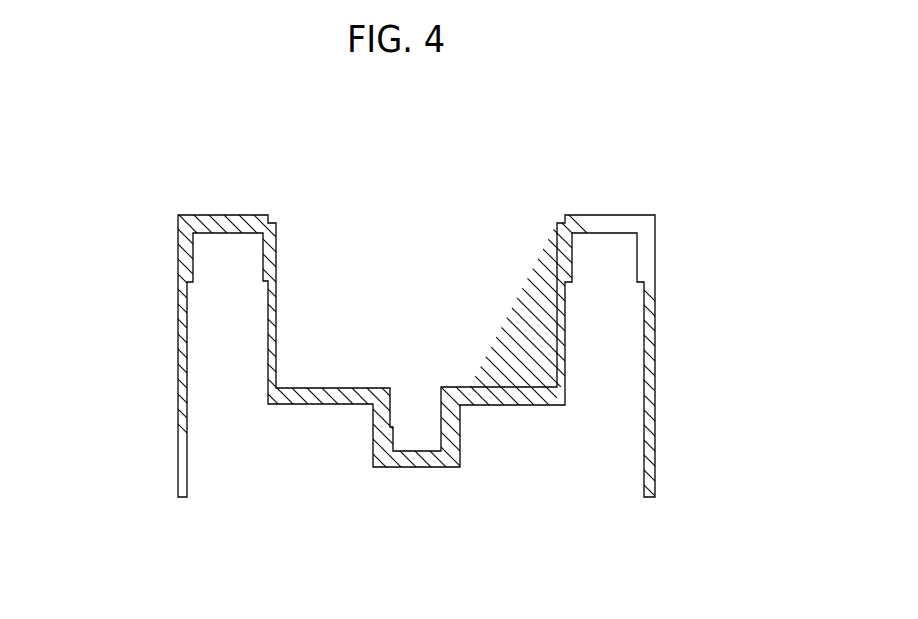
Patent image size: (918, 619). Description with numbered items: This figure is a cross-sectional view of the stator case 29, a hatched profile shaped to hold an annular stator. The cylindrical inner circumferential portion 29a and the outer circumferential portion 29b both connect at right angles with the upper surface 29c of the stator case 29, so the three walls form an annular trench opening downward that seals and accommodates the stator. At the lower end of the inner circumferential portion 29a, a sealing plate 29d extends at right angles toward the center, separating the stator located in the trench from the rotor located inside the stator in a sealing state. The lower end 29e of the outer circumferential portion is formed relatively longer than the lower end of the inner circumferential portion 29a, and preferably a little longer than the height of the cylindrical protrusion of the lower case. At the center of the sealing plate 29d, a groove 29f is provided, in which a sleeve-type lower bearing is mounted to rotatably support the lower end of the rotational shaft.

The stator case 29 is at (612, 190).
The inner circumferential portion 29a is at (276, 265).
The outer circumferential portion 29b is at (178, 315).
The upper surface 29c is at (230, 216).
The sealing plate 29d is at (338, 387).
The lower end of the outer circumferential portion 29e is at (188, 460).
The groove 29f is at (441, 443).